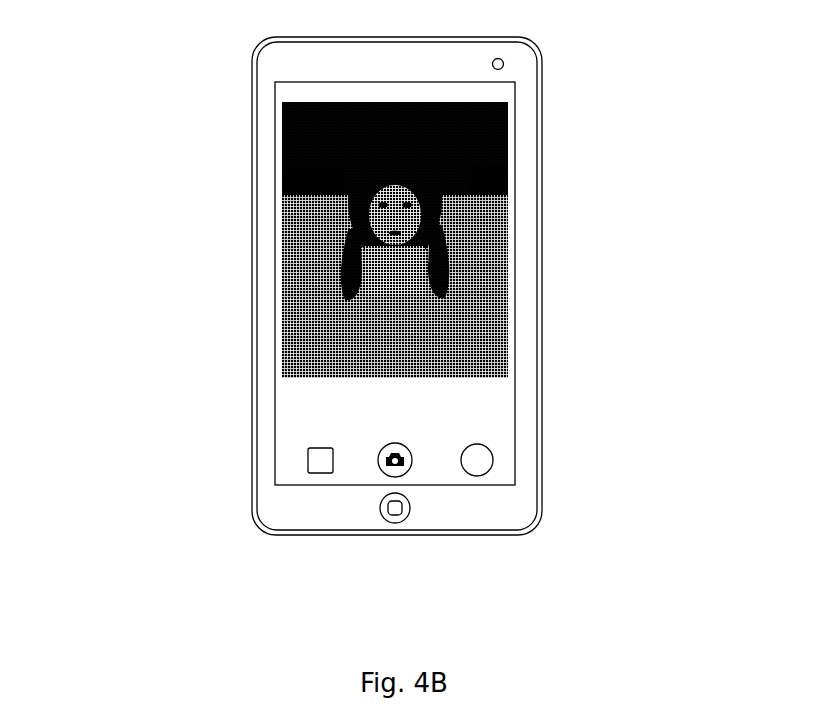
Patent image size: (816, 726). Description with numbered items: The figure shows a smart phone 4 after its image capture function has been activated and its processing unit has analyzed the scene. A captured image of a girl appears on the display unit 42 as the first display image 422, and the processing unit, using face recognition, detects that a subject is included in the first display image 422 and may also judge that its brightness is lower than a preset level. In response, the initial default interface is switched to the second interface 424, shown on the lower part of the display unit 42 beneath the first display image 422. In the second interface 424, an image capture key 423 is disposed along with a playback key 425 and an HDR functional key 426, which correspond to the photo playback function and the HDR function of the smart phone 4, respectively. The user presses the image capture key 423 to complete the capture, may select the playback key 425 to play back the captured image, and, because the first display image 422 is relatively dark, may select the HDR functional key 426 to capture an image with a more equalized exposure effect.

The smart phone 4 is at (252, 106).
The display unit 42 is at (337, 485).
The first display image 422 is at (497, 102).
The image capture key 423 is at (395, 443).
The second interface 424 is at (397, 415).
The playback key 425 is at (307, 460).
The HDR functional key 426 is at (494, 457).